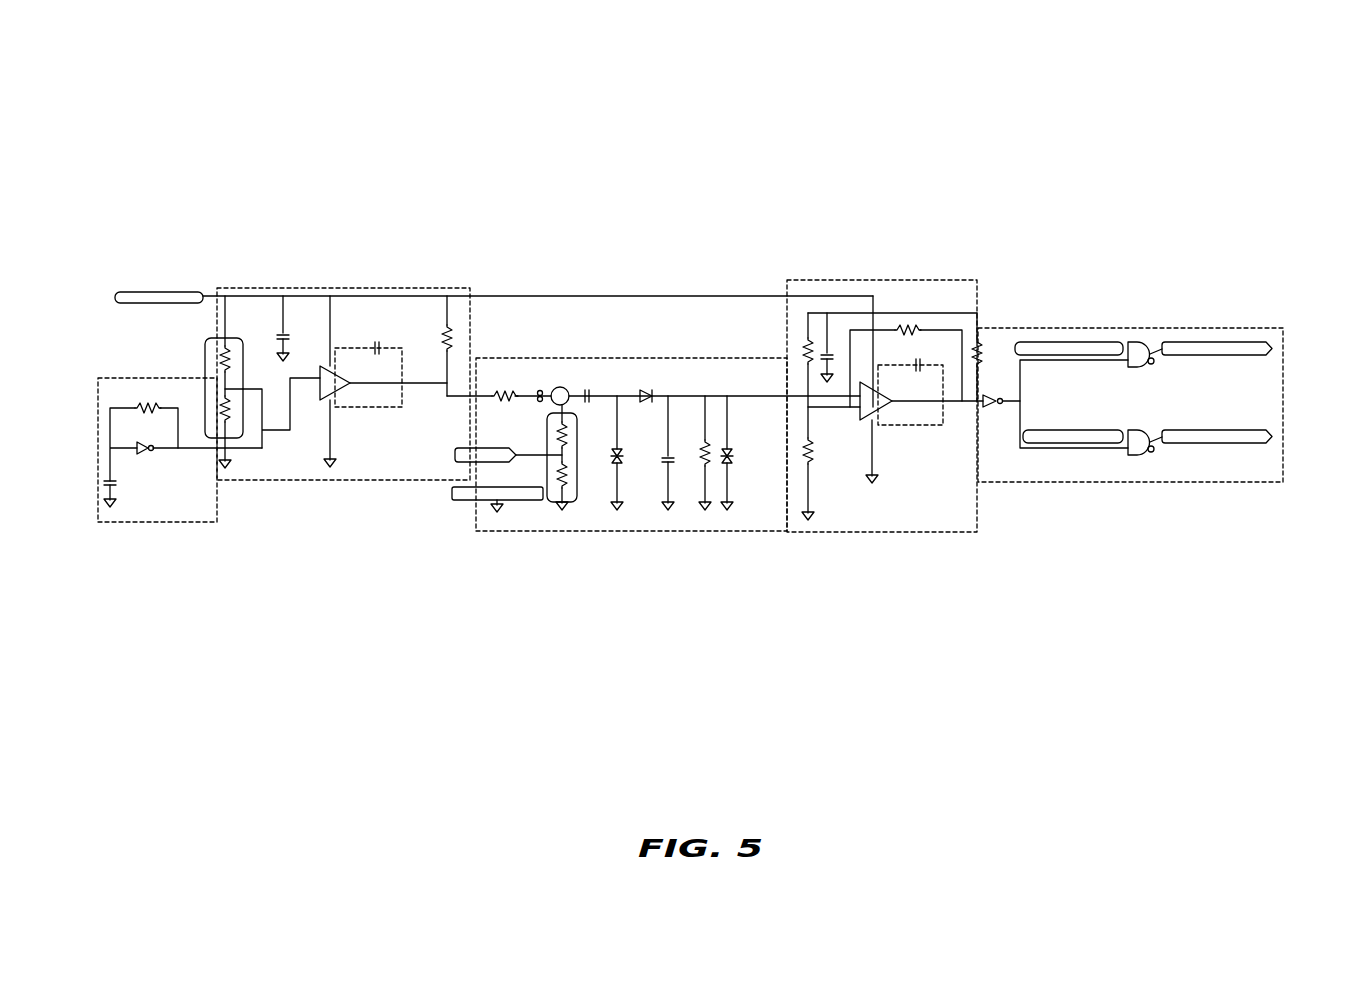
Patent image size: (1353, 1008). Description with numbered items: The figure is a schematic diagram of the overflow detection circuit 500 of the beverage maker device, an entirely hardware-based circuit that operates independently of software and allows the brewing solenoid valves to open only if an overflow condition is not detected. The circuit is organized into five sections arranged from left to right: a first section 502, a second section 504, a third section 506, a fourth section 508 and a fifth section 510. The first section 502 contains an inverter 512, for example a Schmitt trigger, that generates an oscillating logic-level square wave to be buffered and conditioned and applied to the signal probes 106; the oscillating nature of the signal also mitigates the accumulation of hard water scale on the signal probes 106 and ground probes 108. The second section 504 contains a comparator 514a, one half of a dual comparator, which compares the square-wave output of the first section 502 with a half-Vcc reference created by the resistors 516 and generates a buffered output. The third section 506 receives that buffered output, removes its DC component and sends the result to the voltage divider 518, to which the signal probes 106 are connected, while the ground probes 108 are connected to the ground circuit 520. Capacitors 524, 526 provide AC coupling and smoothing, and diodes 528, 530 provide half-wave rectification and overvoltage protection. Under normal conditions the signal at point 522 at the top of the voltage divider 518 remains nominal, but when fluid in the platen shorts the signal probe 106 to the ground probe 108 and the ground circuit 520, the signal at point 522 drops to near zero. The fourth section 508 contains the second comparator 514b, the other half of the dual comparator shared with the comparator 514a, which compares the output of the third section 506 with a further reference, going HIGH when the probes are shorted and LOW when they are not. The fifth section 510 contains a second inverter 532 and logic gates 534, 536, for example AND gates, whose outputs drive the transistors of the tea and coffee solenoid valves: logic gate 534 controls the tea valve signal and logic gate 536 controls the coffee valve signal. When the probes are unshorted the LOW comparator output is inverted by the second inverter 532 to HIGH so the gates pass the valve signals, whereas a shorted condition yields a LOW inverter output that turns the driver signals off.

The overflow detection circuit 500 is at (176, 135).
The first section 502 is at (163, 378).
The second section 504 is at (380, 288).
The third section 506 is at (548, 532).
The fourth section 508 is at (877, 280).
The fifth section 510 is at (1222, 482).
The inverter 512 is at (143, 455).
The comparator 514a is at (325, 375).
The second comparator 514b is at (875, 412).
The resistors 516 is at (223, 345).
The voltage divider 518 is at (578, 445).
The ground circuit 520 is at (491, 511).
The point 522 is at (567, 387).
The capacitor 524 is at (587, 390).
The capacitor 526 is at (667, 463).
The diode 528 is at (645, 390).
The diode 530 is at (732, 463).
The second inverter 532 is at (989, 395).
The logic gate 534 is at (1140, 342).
The logic gate 536 is at (1133, 455).
The signal probes 106 is at (485, 455).
The ground probes 108 is at (463, 488).